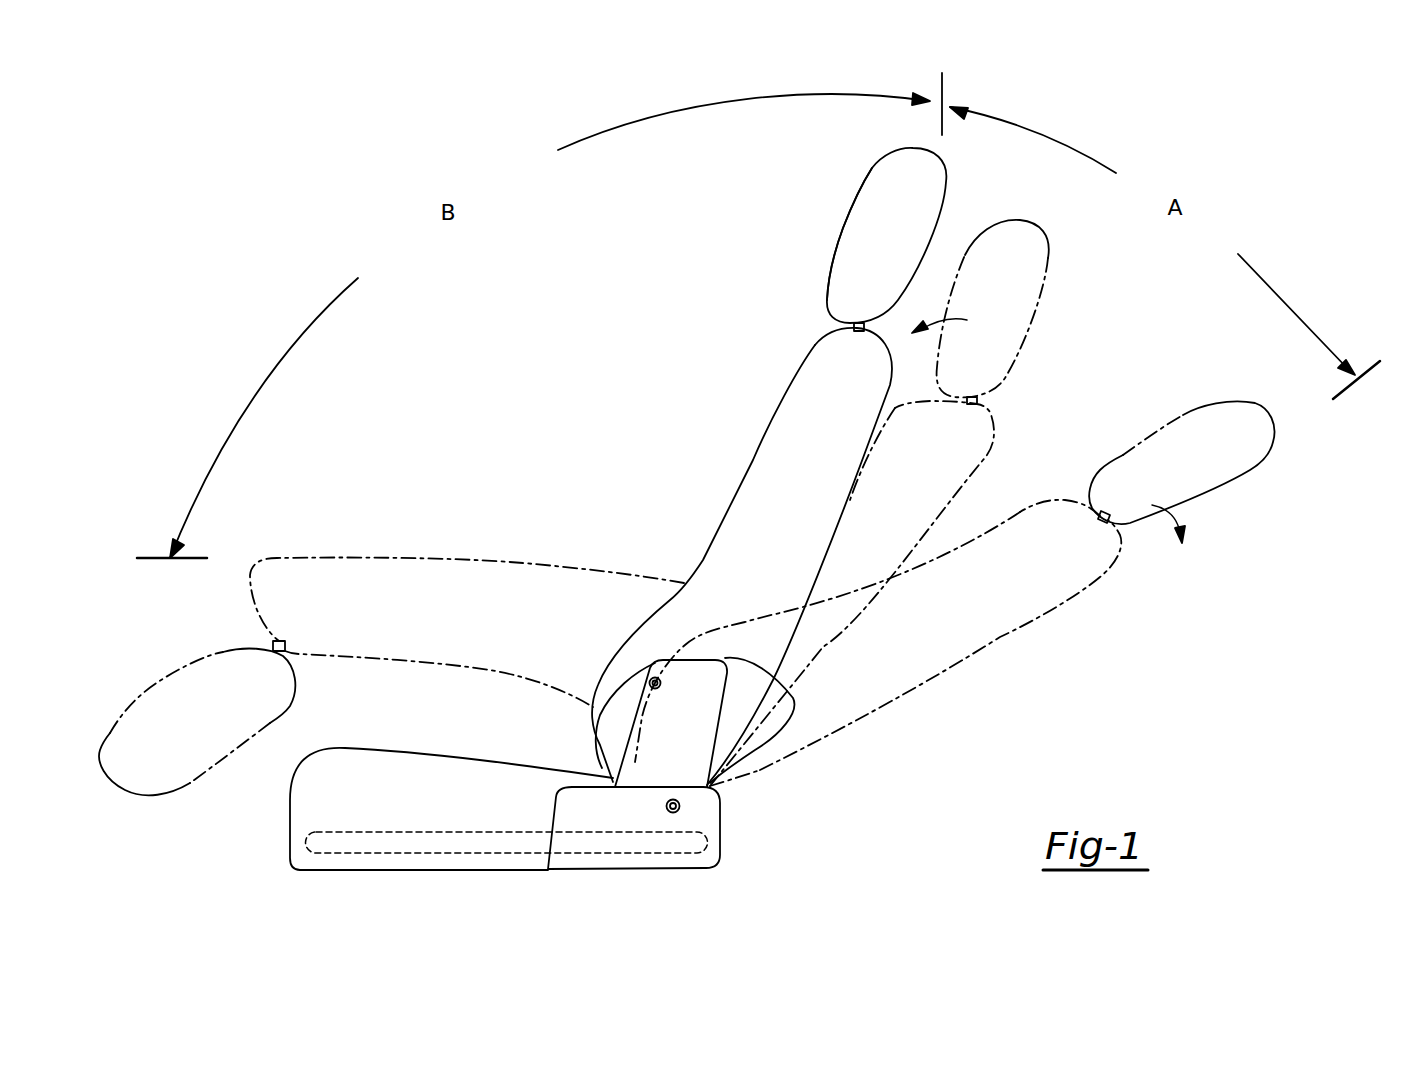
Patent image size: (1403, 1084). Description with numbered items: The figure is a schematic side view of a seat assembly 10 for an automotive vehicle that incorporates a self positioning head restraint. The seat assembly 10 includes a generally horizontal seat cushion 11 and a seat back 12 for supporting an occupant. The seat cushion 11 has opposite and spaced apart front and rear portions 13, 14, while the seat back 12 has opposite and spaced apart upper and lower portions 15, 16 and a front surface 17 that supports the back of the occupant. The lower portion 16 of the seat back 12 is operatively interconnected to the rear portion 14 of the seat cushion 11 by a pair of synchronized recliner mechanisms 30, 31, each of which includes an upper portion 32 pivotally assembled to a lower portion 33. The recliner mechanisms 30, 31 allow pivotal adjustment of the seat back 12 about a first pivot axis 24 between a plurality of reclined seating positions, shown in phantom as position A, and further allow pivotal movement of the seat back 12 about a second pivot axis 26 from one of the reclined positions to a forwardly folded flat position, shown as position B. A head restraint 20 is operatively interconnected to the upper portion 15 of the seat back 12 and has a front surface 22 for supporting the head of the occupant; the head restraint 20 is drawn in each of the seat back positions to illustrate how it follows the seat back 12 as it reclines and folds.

The seat assembly 10 is at (838, 822).
The seat cushion assembly 11 is at (352, 853).
The seat back 12 is at (766, 397).
The front portion of seat cushion 13 is at (290, 833).
The rear portion of seat cushion 14 is at (720, 843).
The upper portion of seat back 15 is at (827, 333).
The lower portion of seat back 16 is at (737, 780).
The front surface of seat back 17 is at (737, 503).
The head restraint 20 is at (846, 193).
The front surface of head restraint 22 is at (845, 228).
The first pivot axis 24 is at (673, 813).
The second pivot axis 26 is at (649, 684).
The recliner mechanism 30 is at (627, 871).
The recliner mechanism 31 is at (606, 888).
The upper portion of recliner mechanism 32 is at (618, 742).
The lower portion of recliner mechanism 33 is at (550, 840).